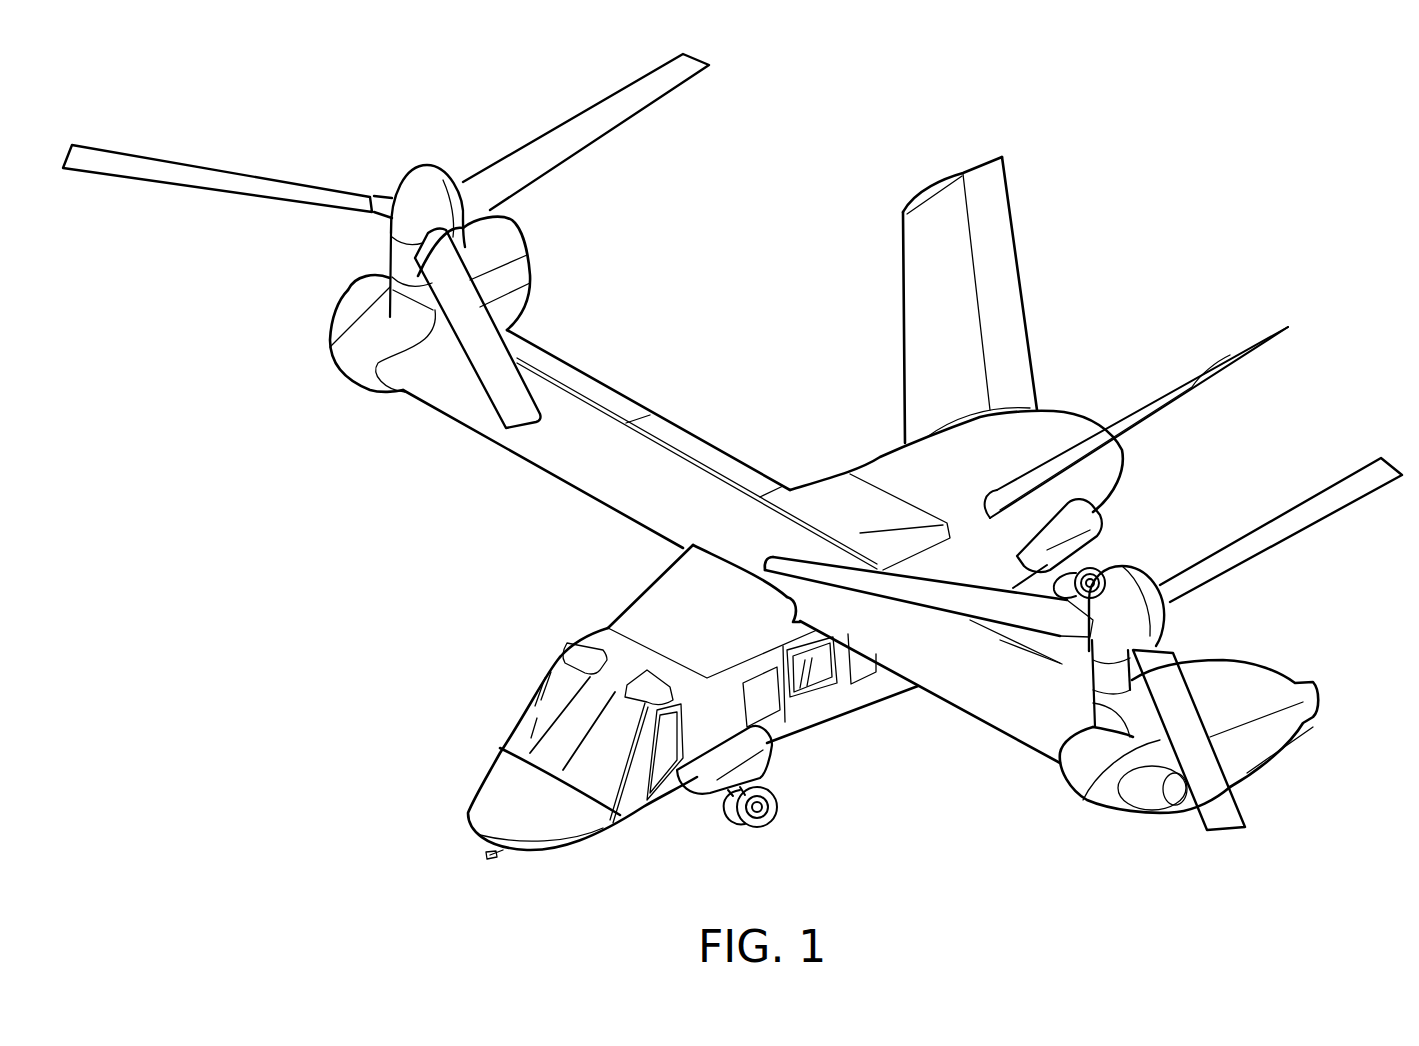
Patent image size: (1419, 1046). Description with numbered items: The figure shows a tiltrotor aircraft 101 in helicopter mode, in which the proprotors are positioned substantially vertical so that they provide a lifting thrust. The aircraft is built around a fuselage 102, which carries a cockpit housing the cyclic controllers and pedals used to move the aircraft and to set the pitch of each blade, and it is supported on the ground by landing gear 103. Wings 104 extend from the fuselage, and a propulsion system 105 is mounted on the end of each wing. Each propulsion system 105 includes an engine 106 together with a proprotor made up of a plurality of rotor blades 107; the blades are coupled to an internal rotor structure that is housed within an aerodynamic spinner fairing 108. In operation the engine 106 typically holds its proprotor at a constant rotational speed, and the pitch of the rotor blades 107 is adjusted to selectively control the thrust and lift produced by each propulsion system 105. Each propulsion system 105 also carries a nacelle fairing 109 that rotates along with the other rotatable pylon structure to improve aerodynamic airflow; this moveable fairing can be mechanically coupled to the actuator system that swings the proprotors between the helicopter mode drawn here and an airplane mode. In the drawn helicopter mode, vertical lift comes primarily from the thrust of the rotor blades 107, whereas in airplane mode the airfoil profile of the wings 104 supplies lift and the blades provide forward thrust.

The tiltrotor aircraft 101 is at (1209, 98).
The fuselage 102 is at (807, 723).
The landing gear 103 is at (763, 828).
The wings 104 is at (577, 473).
The propulsion system 105 is at (308, 320).
The engine 106 is at (520, 292).
The rotor blades 107 is at (568, 118).
The aerodynamic spinner fairing 108 is at (426, 164).
The nacelle fairing 109 is at (387, 257).